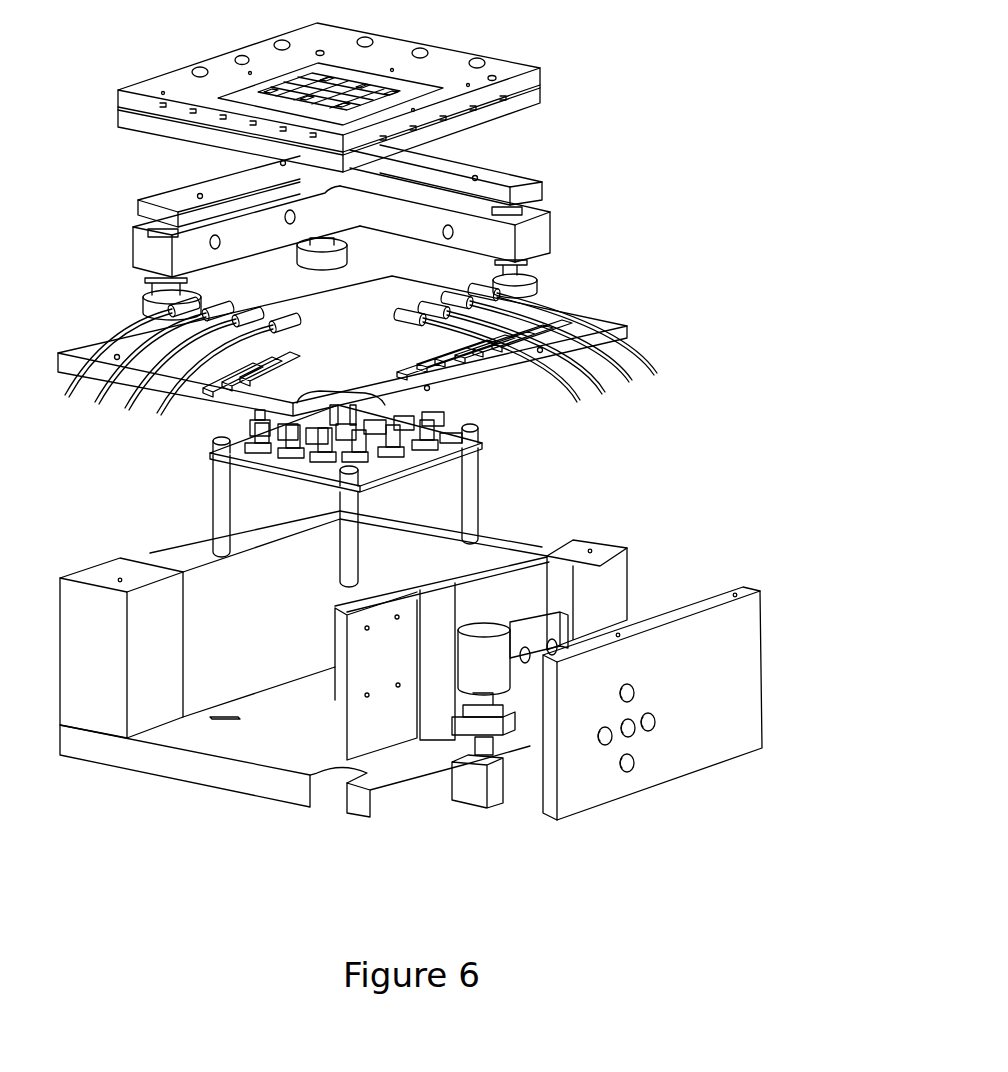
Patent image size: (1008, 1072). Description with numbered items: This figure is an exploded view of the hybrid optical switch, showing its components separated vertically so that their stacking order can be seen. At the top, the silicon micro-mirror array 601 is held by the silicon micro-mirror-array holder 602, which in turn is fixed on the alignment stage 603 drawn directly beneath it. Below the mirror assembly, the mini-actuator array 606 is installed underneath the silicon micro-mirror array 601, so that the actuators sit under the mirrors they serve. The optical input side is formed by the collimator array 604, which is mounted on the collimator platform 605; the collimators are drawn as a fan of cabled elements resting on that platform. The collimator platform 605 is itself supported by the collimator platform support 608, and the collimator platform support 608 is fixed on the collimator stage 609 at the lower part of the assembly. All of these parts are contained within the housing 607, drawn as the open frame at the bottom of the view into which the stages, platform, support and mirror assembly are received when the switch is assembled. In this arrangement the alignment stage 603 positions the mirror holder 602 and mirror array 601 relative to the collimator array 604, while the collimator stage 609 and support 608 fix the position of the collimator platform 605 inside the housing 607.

The silicon micro-mirror array 601 is at (260, 100).
The silicon micro-mirror-array holder 602 is at (543, 85).
The alignment stage 603 is at (555, 228).
The collimator array 604 is at (177, 300).
The collimator platform 605 is at (630, 333).
The mini-actuator array 606 is at (487, 487).
The housing 607 is at (595, 542).
The collimator platform support 608 is at (728, 632).
The collimator stage 609 is at (475, 783).